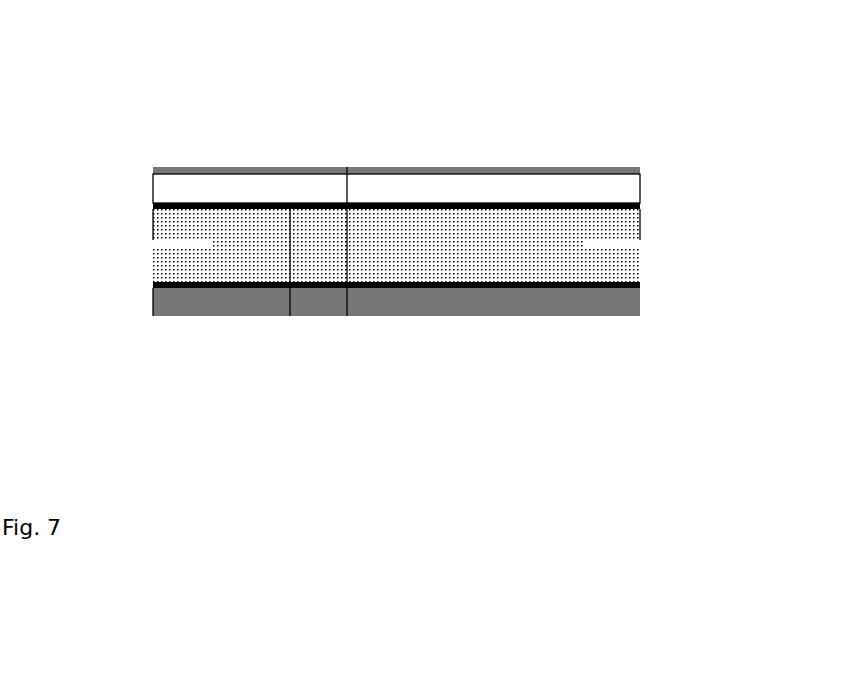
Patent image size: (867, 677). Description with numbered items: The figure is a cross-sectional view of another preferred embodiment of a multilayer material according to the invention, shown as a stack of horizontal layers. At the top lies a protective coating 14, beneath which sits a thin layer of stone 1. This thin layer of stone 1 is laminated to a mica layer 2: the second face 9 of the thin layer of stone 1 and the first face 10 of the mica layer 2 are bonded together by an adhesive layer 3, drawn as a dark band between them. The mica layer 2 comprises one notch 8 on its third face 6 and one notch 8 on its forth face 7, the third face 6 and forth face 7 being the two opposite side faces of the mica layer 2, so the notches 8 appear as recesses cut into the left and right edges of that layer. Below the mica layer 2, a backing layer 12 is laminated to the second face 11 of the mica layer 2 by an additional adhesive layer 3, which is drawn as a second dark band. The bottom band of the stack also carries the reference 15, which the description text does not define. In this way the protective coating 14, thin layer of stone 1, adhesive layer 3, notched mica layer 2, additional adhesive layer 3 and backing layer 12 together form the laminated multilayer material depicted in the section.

The thin layer of stone 1 is at (228, 183).
The mica layer 2 is at (439, 237).
The adhesive layer 3 is at (640, 208).
The third face 6 is at (153, 223).
The forth face 7 is at (640, 222).
The notch 8 is at (188, 245).
The second face 9 is at (347, 167).
The first face 10 is at (290, 316).
The second face 11 is at (347, 316).
The backing layer 12 is at (200, 300).
The protective coating 14 is at (558, 171).
The base layer 15 is at (604, 316).